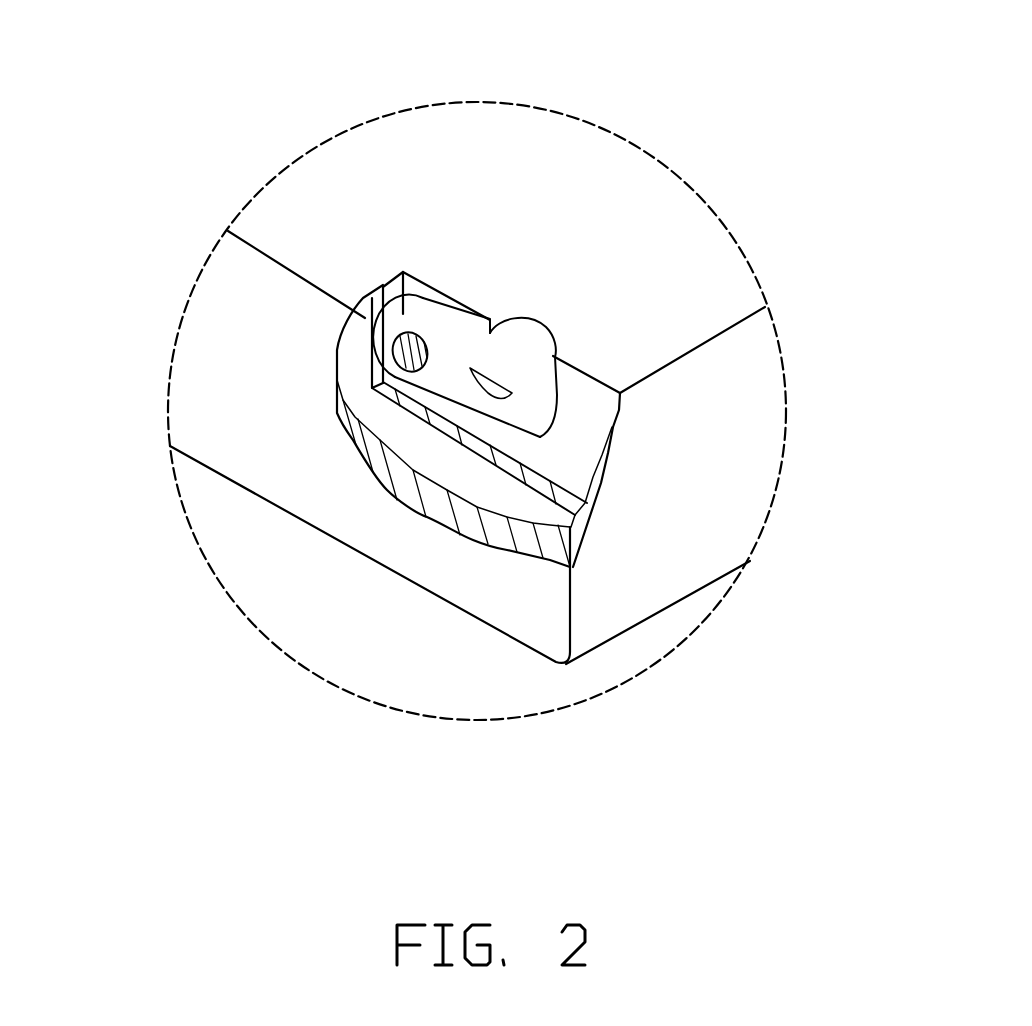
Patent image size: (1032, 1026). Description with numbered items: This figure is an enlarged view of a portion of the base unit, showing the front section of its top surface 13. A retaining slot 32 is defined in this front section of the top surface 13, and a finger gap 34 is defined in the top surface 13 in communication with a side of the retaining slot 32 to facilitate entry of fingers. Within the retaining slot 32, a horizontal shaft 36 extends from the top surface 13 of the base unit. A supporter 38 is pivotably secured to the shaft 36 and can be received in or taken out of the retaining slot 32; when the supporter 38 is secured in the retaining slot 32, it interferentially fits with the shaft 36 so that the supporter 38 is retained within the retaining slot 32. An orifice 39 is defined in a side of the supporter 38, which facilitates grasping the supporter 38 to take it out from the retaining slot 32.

The top surface 13 is at (692, 293).
The retaining slot 32 is at (537, 458).
The finger gap 34 is at (530, 343).
The horizontal shaft 36 is at (403, 350).
The supporter 38 is at (449, 362).
The orifice 39 is at (488, 390).